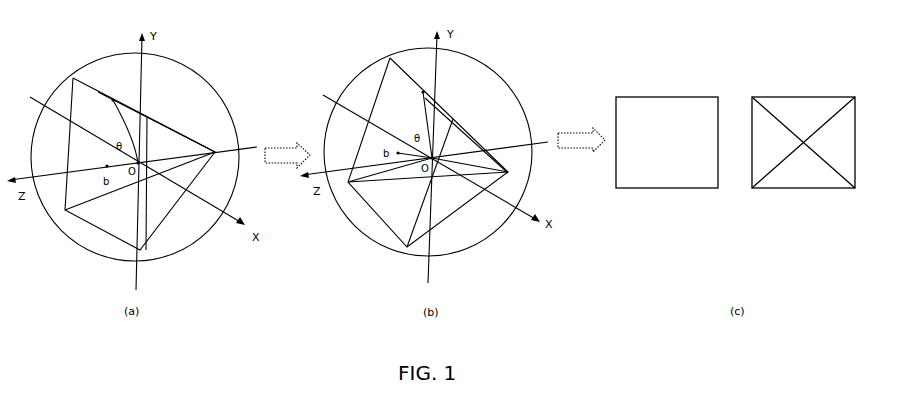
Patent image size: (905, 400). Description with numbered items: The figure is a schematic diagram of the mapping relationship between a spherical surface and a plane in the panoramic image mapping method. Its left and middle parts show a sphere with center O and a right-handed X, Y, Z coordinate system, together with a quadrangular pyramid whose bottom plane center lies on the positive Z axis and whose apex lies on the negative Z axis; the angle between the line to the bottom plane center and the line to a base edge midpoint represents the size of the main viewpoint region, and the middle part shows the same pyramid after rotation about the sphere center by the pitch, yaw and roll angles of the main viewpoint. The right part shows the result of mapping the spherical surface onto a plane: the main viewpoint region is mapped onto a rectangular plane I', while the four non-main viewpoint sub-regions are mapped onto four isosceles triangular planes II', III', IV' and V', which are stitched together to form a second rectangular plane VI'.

The rectangular plane I' is at (670, 153).
The isosceles triangular plane II' is at (773, 143).
The isosceles triangular plane III' is at (801, 115).
The isosceles triangular plane IV' is at (834, 143).
The isosceles triangular plane V' is at (804, 172).
The rectangular plane VI' is at (808, 153).